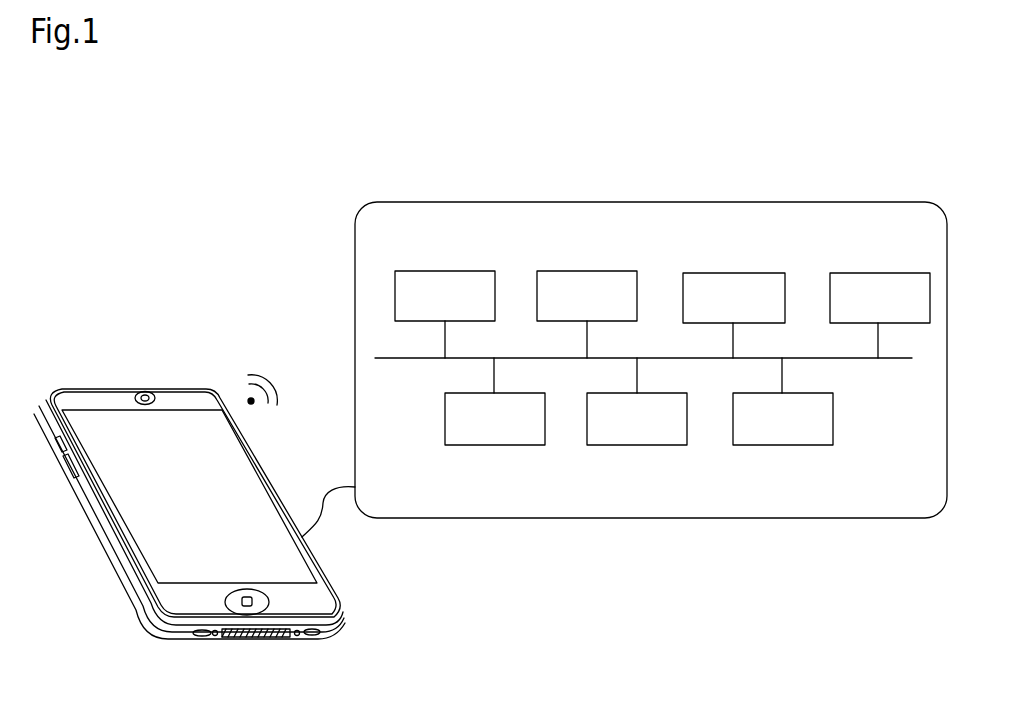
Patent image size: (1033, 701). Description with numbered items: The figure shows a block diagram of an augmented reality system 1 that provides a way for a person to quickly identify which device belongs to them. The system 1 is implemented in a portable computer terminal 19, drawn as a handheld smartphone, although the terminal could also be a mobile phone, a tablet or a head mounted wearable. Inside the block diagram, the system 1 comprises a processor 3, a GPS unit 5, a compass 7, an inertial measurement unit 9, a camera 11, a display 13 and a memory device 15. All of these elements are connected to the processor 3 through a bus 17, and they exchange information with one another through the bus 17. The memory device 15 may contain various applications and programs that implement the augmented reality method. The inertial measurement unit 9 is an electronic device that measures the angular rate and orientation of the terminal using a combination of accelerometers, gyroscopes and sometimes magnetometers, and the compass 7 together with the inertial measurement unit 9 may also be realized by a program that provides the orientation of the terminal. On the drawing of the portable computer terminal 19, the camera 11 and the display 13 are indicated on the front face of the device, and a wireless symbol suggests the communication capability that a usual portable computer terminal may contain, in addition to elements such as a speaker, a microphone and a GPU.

The system 1 is at (486, 186).
The processor 3 is at (448, 271).
The GPS unit 5 is at (490, 445).
The compass 7 is at (590, 271).
The inertial measurement unit 9 is at (640, 445).
The camera 11 is at (732, 273).
The display 13 is at (781, 445).
The memory device 15 is at (878, 273).
The bus 17 is at (910, 360).
The portable computer terminal 19 is at (87, 389).